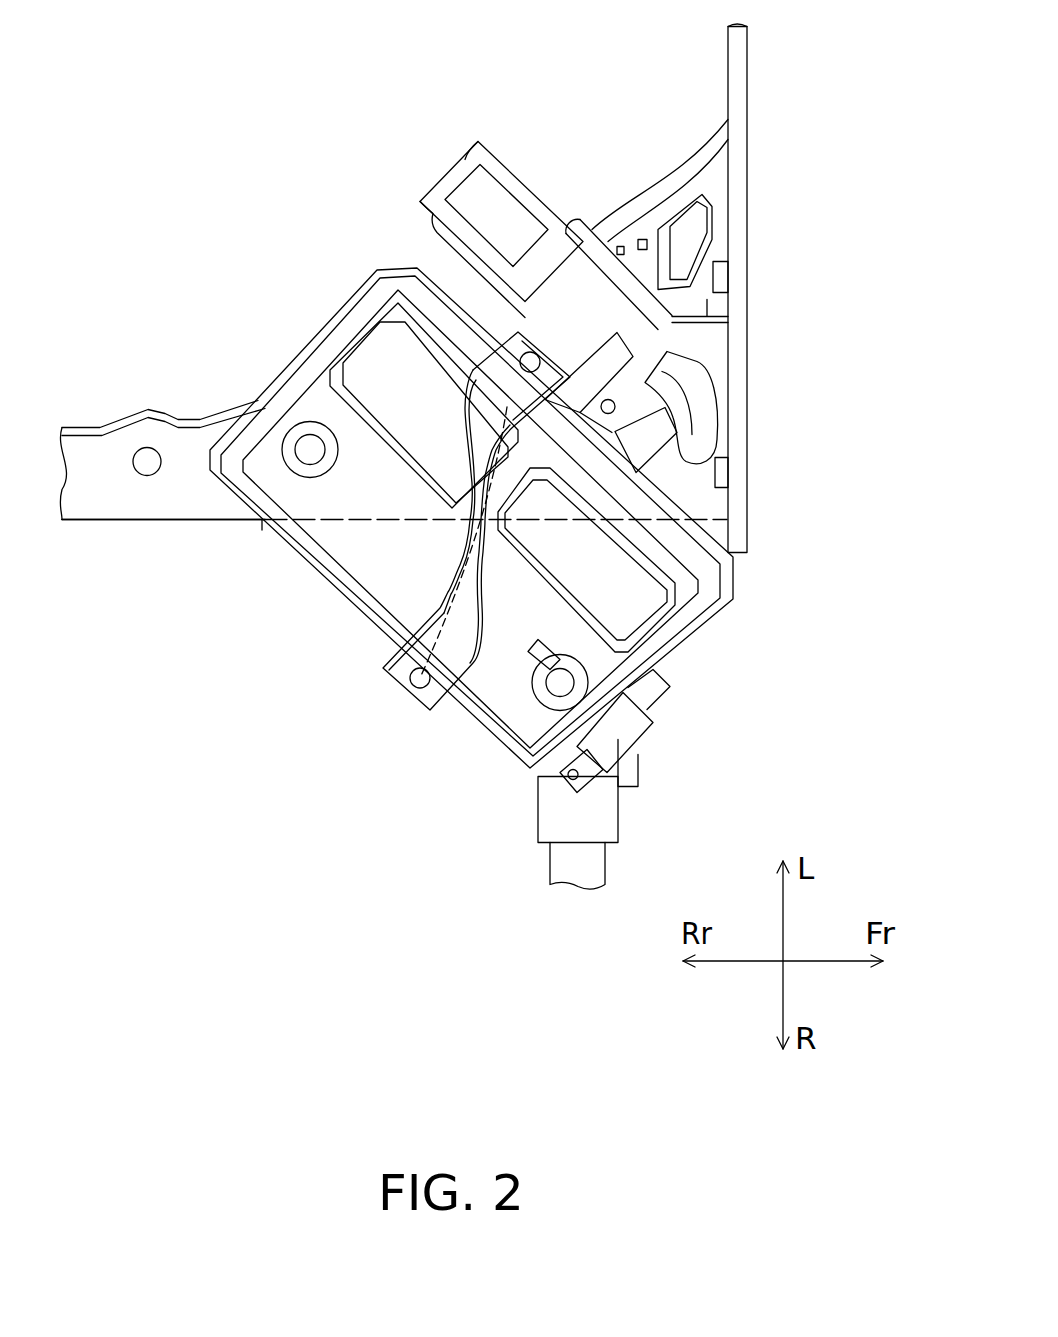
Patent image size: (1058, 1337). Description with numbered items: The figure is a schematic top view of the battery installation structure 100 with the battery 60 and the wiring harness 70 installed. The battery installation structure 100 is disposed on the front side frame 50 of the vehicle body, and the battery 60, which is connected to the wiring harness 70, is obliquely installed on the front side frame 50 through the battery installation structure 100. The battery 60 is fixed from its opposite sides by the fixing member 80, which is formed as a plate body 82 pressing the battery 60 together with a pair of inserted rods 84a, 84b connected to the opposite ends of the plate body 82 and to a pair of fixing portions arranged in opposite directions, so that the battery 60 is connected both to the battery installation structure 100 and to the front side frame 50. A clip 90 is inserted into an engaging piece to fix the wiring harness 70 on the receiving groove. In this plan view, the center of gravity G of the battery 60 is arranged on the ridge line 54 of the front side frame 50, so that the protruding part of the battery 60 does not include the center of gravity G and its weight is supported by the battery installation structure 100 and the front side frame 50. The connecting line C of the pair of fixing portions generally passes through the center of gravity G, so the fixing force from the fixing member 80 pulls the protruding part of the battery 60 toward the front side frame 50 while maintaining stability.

The battery installation structure 100 is at (173, 676).
The front side frame 50 is at (180, 434).
The ridge line 54 is at (152, 526).
The battery 60 is at (609, 568).
The wiring harness 70 is at (590, 814).
The fixing member 80 is at (336, 657).
The plate body 82 is at (452, 615).
The inserted rod 84a is at (412, 672).
The inserted rod 84b is at (527, 352).
The clip 90 is at (615, 762).
The connecting line C is at (499, 399).
The center of gravity G is at (458, 514).